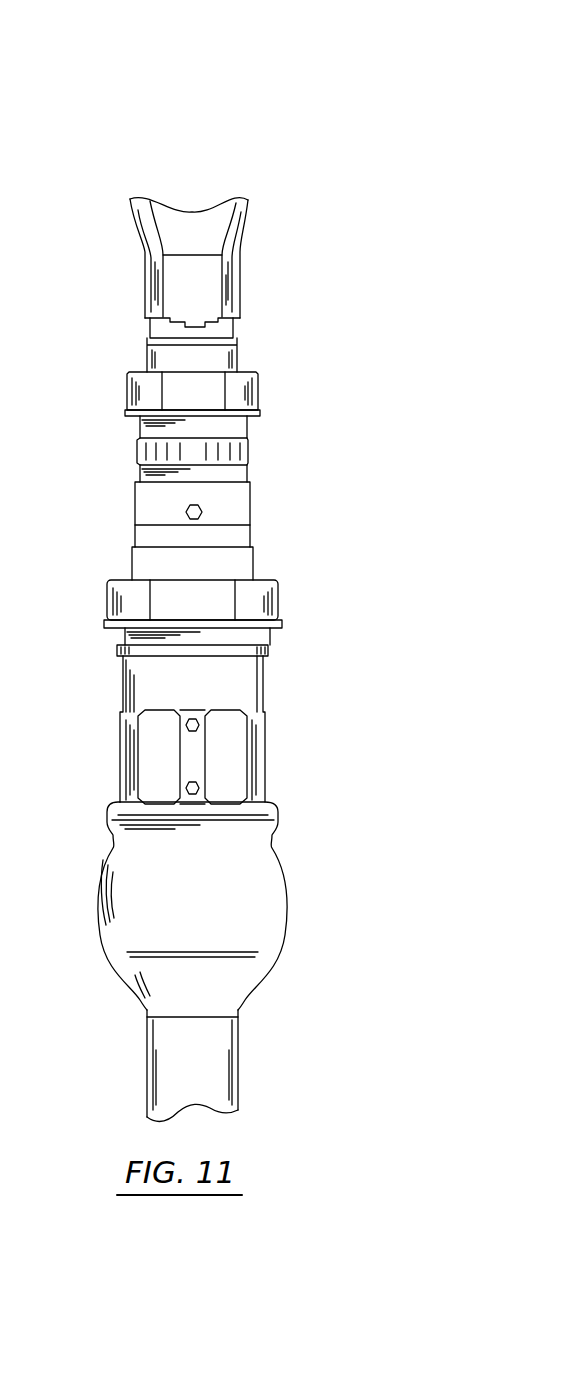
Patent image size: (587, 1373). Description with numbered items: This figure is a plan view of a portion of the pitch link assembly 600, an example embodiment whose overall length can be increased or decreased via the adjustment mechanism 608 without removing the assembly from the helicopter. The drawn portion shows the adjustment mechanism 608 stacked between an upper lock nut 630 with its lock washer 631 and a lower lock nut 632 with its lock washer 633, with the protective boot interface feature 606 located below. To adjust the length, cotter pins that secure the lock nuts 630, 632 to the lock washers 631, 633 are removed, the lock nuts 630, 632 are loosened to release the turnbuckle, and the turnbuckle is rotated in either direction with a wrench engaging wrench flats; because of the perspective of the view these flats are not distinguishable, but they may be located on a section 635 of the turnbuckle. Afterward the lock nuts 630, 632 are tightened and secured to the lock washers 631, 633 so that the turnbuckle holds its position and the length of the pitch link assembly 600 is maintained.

The pitch link assembly 600 is at (222, 35).
The protective boot interface feature 606 is at (257, 931).
The adjustment mechanism 608 is at (233, 507).
The lock nut 630 is at (258, 392).
The lock washer 631 is at (240, 428).
The lock nut 632 is at (264, 591).
The lock washer 633 is at (250, 638).
The section of the turnbuckle 635 is at (128, 497).